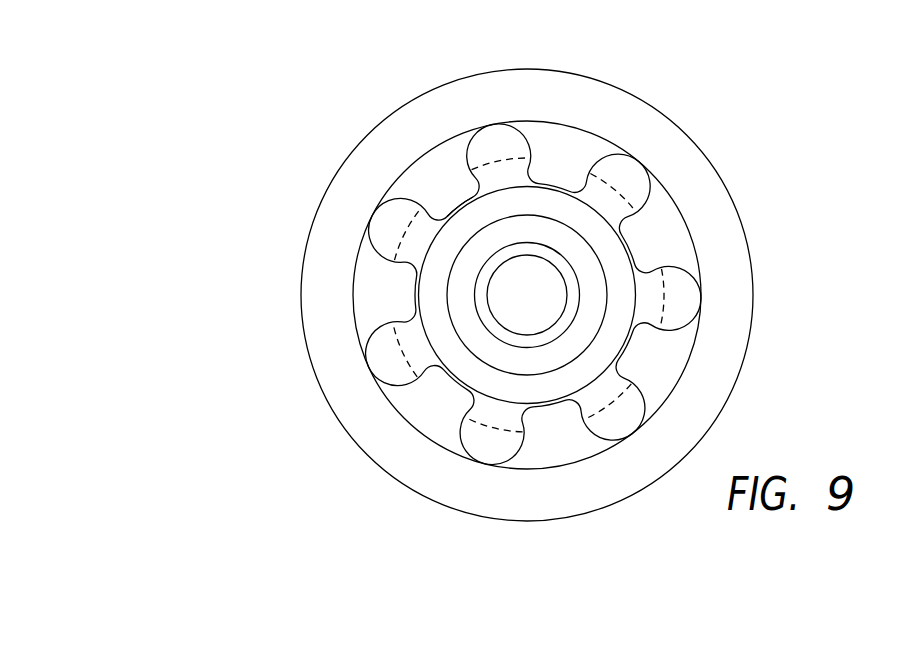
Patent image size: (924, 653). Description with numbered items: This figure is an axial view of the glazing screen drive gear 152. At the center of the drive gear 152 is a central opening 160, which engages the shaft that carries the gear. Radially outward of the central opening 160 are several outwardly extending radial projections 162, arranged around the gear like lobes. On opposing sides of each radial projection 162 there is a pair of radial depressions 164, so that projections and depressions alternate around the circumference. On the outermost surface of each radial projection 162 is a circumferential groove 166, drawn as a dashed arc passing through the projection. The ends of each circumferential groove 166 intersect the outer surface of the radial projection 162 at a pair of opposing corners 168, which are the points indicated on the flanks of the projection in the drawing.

The drive gear 152 is at (245, 395).
The central opening 160 is at (526, 294).
The radial projection 162 is at (467, 150).
The radial depression 164 is at (457, 209).
The circumferential groove 166 is at (495, 158).
The corner 168 is at (466, 173).